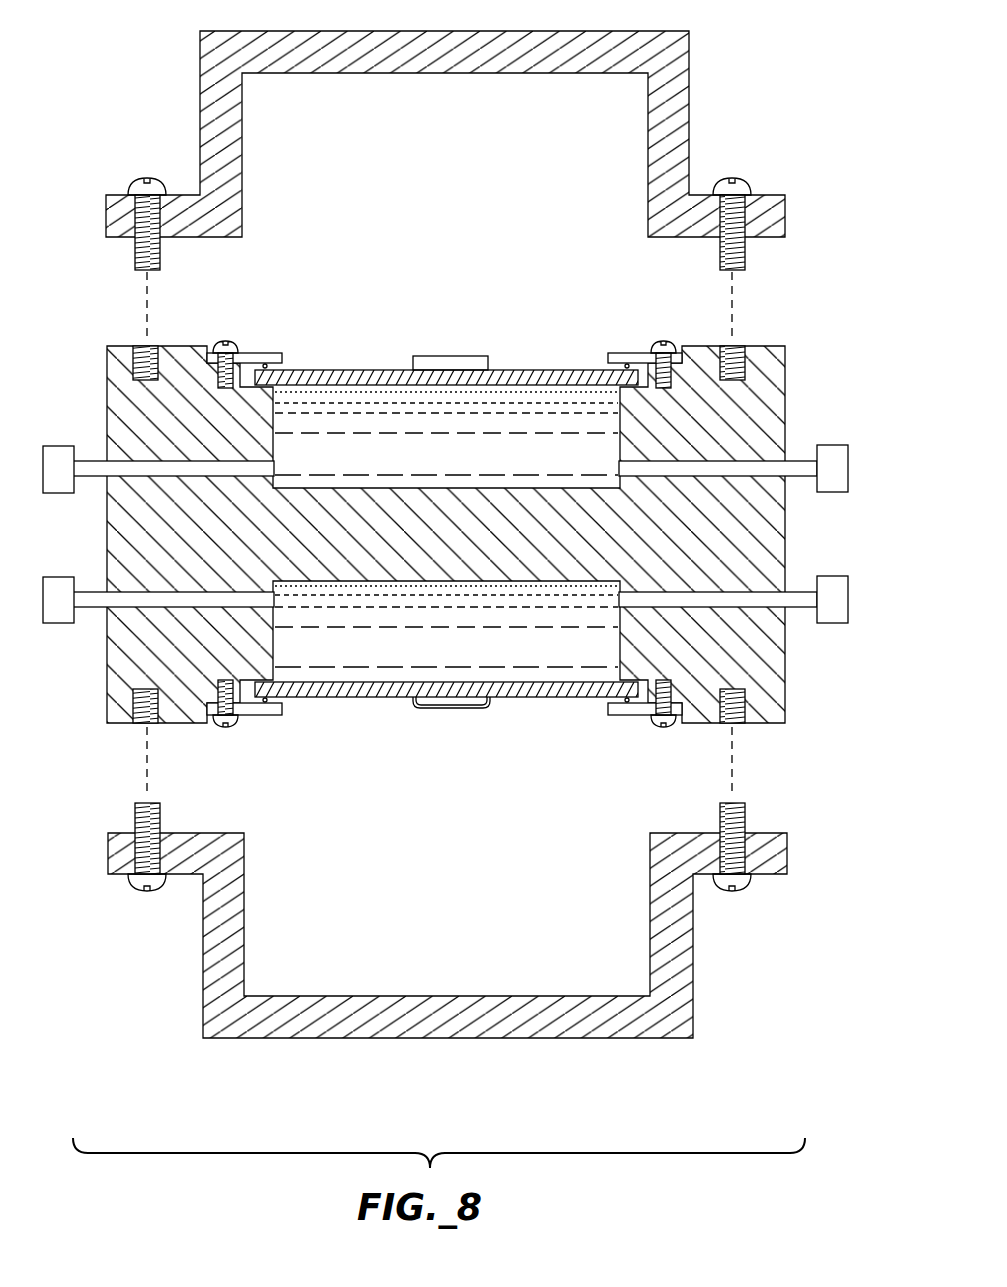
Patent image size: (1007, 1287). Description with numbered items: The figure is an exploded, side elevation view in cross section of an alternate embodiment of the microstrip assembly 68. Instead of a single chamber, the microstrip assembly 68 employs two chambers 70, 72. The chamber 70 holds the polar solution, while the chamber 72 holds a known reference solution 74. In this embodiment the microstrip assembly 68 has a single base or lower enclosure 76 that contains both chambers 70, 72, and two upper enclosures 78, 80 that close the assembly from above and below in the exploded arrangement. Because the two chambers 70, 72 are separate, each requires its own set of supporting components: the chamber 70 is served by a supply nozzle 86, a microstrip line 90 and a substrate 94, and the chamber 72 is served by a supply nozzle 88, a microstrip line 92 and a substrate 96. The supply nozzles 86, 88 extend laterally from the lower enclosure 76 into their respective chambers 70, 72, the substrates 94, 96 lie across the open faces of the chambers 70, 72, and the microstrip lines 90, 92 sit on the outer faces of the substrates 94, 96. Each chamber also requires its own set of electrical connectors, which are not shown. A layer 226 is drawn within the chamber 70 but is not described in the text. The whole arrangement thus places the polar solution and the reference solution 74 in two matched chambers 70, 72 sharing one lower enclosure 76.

The microstrip assembly 68 is at (146, 1000).
The chamber 70 is at (378, 467).
The chamber 72 is at (355, 657).
The reference solution 74 is at (373, 654).
The lower enclosure 76 is at (182, 357).
The upper enclosure 78 is at (347, 67).
The upper enclosure 80 is at (352, 1003).
The supply nozzle 86 is at (57, 450).
The supply nozzle 88 is at (50, 622).
The microstrip line 90 is at (478, 357).
The microstrip line 92 is at (485, 707).
The substrate 94 is at (312, 370).
The substrate 96 is at (310, 697).
The sample layer 226 is at (358, 413).